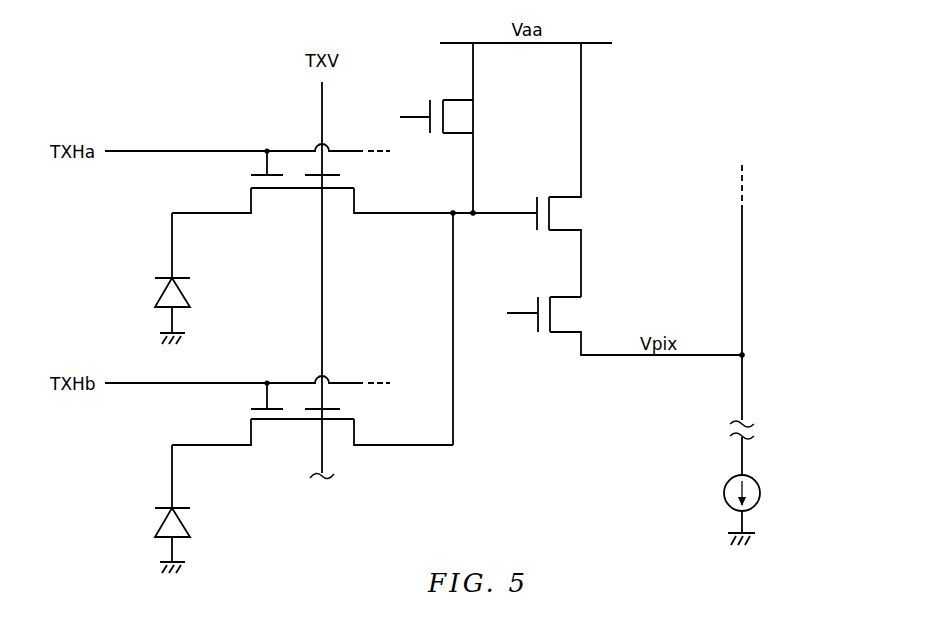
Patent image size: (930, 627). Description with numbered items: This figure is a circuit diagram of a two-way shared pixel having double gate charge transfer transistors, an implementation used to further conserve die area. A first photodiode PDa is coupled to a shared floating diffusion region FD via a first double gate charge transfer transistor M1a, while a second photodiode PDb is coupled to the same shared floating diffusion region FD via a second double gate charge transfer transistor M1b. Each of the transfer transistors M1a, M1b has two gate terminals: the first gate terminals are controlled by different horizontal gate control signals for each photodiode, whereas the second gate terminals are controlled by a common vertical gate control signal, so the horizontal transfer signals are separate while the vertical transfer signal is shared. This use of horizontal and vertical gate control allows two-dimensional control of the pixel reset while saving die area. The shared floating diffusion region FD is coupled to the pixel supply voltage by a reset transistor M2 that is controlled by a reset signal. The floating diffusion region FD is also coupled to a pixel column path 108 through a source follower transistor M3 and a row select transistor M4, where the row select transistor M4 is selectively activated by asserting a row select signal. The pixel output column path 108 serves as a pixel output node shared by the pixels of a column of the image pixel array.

The pixel column path 108 is at (742, 253).
The first double gate charge transfer transistor M1a is at (297, 197).
The second double gate charge transfer transistor M1b is at (298, 428).
The reset transistor M2 is at (432, 116).
The source follower transistor M3 is at (572, 170).
The row select transistor M4 is at (612, 326).
The first photodiode PDa is at (153, 278).
The second photodiode PDb is at (153, 509).
The shared floating diffusion region FD is at (450, 218).